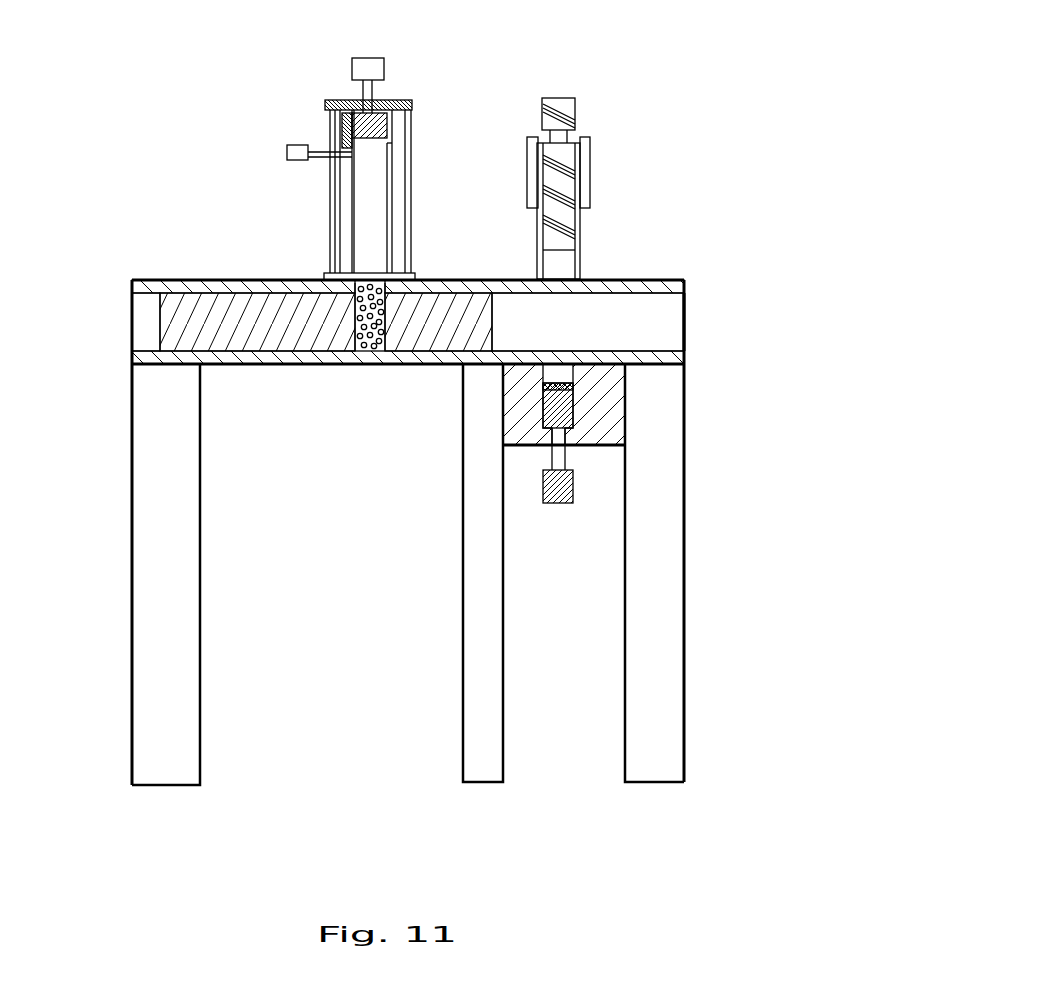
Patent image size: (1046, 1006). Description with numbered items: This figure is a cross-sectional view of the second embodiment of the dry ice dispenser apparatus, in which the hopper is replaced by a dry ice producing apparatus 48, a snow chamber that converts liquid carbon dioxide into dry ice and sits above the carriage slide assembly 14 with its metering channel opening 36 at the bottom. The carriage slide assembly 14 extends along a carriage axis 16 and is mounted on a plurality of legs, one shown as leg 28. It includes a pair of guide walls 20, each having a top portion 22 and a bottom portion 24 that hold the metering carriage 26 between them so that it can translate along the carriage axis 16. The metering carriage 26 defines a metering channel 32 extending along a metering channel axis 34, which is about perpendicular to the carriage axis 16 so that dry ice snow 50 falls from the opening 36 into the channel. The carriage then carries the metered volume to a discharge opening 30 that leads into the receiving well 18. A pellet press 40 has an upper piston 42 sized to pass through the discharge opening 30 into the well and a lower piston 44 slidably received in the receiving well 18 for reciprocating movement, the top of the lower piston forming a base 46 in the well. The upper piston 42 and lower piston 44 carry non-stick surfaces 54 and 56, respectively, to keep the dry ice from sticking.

The carriage slide assembly 14 is at (216, 278).
The carriage axis 16 is at (698, 323).
The receiving well 18 is at (600, 434).
The guide walls 20 is at (667, 315).
The top portion 22 is at (628, 283).
The bottom portion 24 is at (270, 372).
The metering carriage 26 is at (205, 328).
The leg 28 is at (183, 603).
The discharge opening 30 is at (567, 350).
The metering channel 32 is at (355, 330).
The metering channel axis 34 is at (370, 383).
The metering channel opening 36 is at (373, 272).
The pellet press 40 is at (626, 117).
The upper piston 42 is at (563, 98).
The lower piston 44 is at (548, 505).
The base 46 is at (550, 378).
The dry ice producing apparatus 48 is at (397, 97).
The dry ice snow 50 is at (378, 356).
The non-stick surface 54 is at (560, 262).
The non-stick surface 56 is at (570, 380).